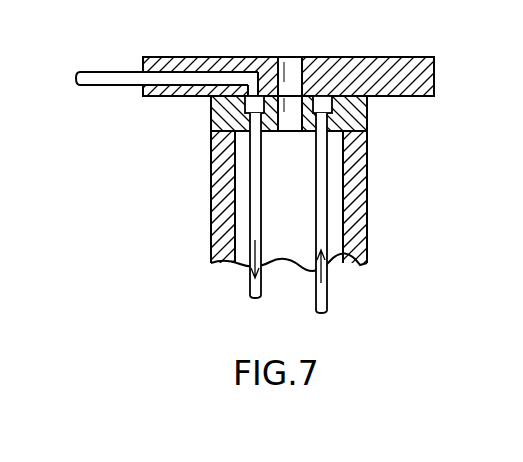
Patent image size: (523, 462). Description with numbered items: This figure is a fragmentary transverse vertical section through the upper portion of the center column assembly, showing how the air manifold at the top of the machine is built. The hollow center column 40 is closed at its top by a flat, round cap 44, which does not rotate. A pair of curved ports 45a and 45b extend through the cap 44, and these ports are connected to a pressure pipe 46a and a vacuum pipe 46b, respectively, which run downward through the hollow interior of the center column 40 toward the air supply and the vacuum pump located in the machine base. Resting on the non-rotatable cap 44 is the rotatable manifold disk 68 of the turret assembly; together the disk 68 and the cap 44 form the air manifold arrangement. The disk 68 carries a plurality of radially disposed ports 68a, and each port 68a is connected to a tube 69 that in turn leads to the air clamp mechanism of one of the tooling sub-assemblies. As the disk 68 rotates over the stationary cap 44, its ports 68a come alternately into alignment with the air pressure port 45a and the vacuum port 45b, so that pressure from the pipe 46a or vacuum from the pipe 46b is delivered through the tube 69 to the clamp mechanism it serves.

The rotating manifold disk 68 is at (393, 72).
The radially disposed port 68a is at (222, 73).
The tube 69 is at (112, 75).
The center column cap 44 is at (210, 103).
The center column 40 is at (355, 188).
The curved port 45a is at (328, 117).
The curved port 45b is at (249, 126).
The pressure pipe 46a is at (324, 238).
The vacuum pipe 46b is at (253, 222).